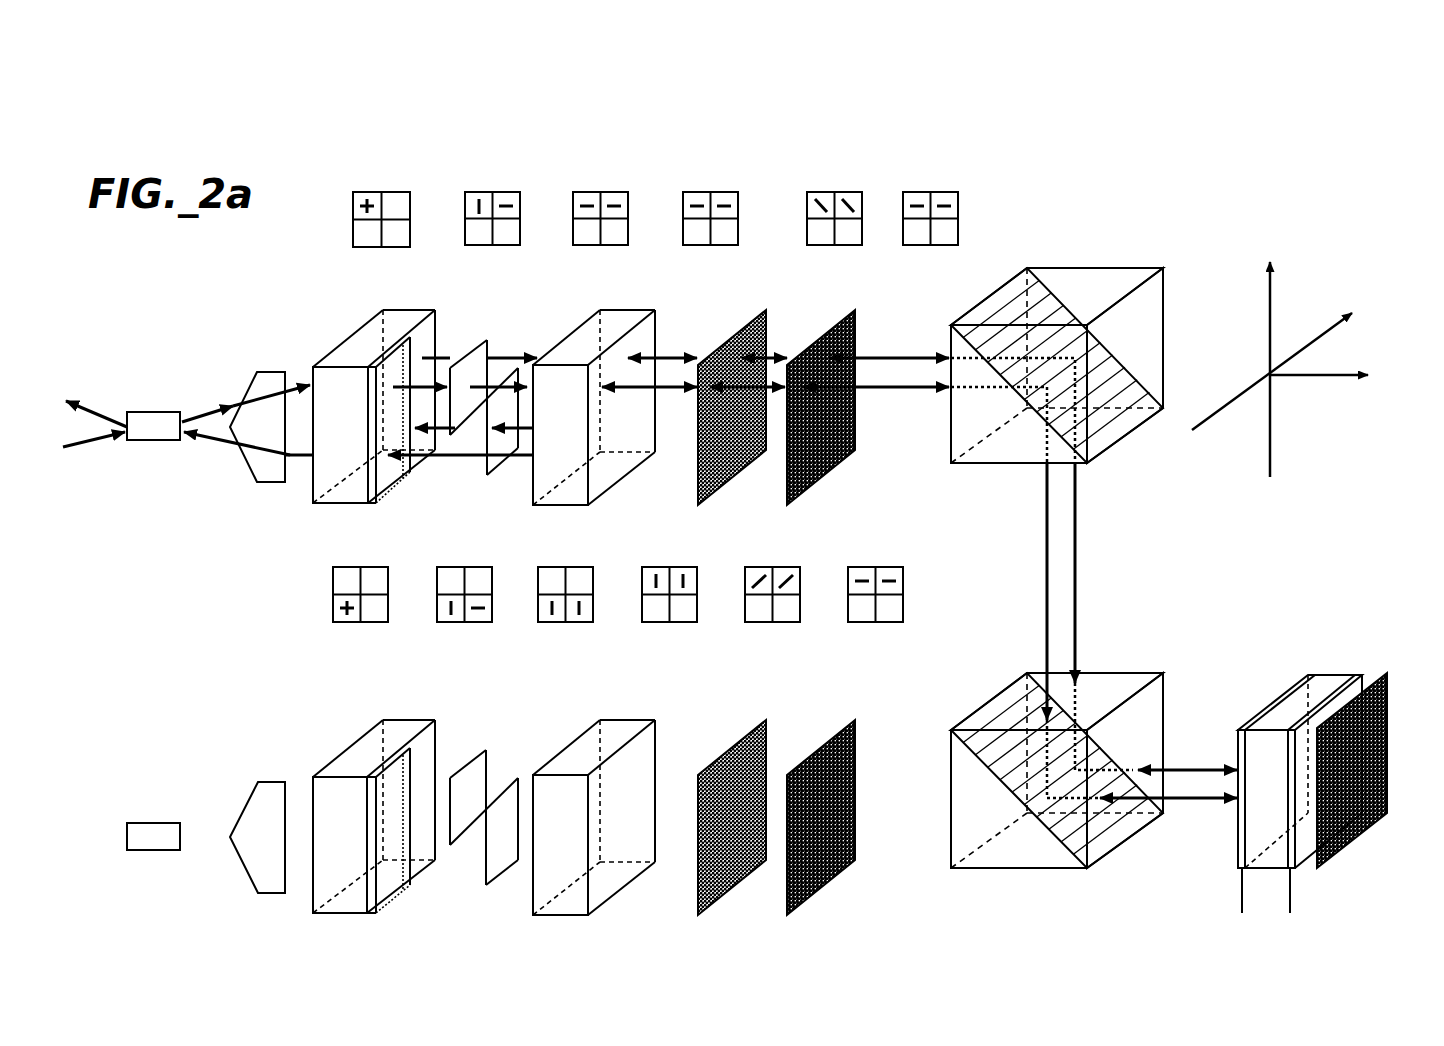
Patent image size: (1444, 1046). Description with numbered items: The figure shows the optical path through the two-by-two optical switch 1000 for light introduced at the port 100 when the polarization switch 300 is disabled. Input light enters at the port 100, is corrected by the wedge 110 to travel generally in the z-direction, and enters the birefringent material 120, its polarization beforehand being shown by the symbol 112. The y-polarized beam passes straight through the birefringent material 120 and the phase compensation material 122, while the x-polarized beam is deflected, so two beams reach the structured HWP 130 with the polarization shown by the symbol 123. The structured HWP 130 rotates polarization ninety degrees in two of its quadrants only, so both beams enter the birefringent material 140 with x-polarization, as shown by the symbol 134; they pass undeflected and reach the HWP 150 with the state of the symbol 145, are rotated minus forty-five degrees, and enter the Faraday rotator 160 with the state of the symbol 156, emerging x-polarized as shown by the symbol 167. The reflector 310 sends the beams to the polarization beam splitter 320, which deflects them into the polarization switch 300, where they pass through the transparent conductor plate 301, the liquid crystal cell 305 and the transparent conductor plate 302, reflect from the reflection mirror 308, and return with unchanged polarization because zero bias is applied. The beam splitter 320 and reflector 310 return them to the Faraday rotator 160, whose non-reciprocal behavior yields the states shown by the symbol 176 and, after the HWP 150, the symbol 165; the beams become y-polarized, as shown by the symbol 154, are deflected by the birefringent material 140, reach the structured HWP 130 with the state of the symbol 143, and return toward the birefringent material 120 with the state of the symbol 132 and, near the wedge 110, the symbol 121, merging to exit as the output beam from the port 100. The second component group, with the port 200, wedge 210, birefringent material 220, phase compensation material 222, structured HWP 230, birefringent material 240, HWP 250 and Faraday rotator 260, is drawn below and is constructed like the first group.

The 2×2 optical switch 1000 is at (1149, 188).
The port 100 is at (160, 411).
The wedge 110 is at (289, 371).
The symbol 112 is at (292, 375).
The birefringent material 120 is at (393, 310).
The symbol 121 is at (291, 478).
The phase compensation material 122 is at (439, 329).
The symbol 123 is at (452, 366).
The structured Half Wave Plate 130 is at (452, 330).
The symbol 132 is at (385, 496).
The symbol 134 is at (490, 342).
The birefringent material 140 is at (635, 310).
The symbol 143 is at (491, 475).
The symbol 145 is at (661, 326).
The HWP 150 is at (767, 320).
The symbol 154 is at (613, 487).
The symbol 156 is at (772, 324).
The Faraday rotator 160 is at (855, 321).
The symbol 165 is at (708, 498).
The symbol 167 is at (859, 324).
The symbol 176 is at (798, 498).
The port 200 is at (168, 852).
The wedge 210 is at (272, 895).
The birefringent material 220 is at (350, 915).
The phase compensation material 222 is at (380, 915).
The structured HWP 230 is at (512, 868).
The birefringent material 240 is at (567, 918).
The HWP 250 is at (715, 917).
The Faraday rotator 260 is at (813, 915).
The polarization switch 300 is at (1286, 776).
The transparent conductor plate 301 is at (1235, 848).
The transparent conductor plate 302 is at (1297, 868).
The liquid crystal cell 305 is at (1336, 673).
The reflection mirror 308 is at (1337, 856).
The reflector 310 is at (1073, 267).
The Polarization BeamSplitter 320 is at (1025, 869).